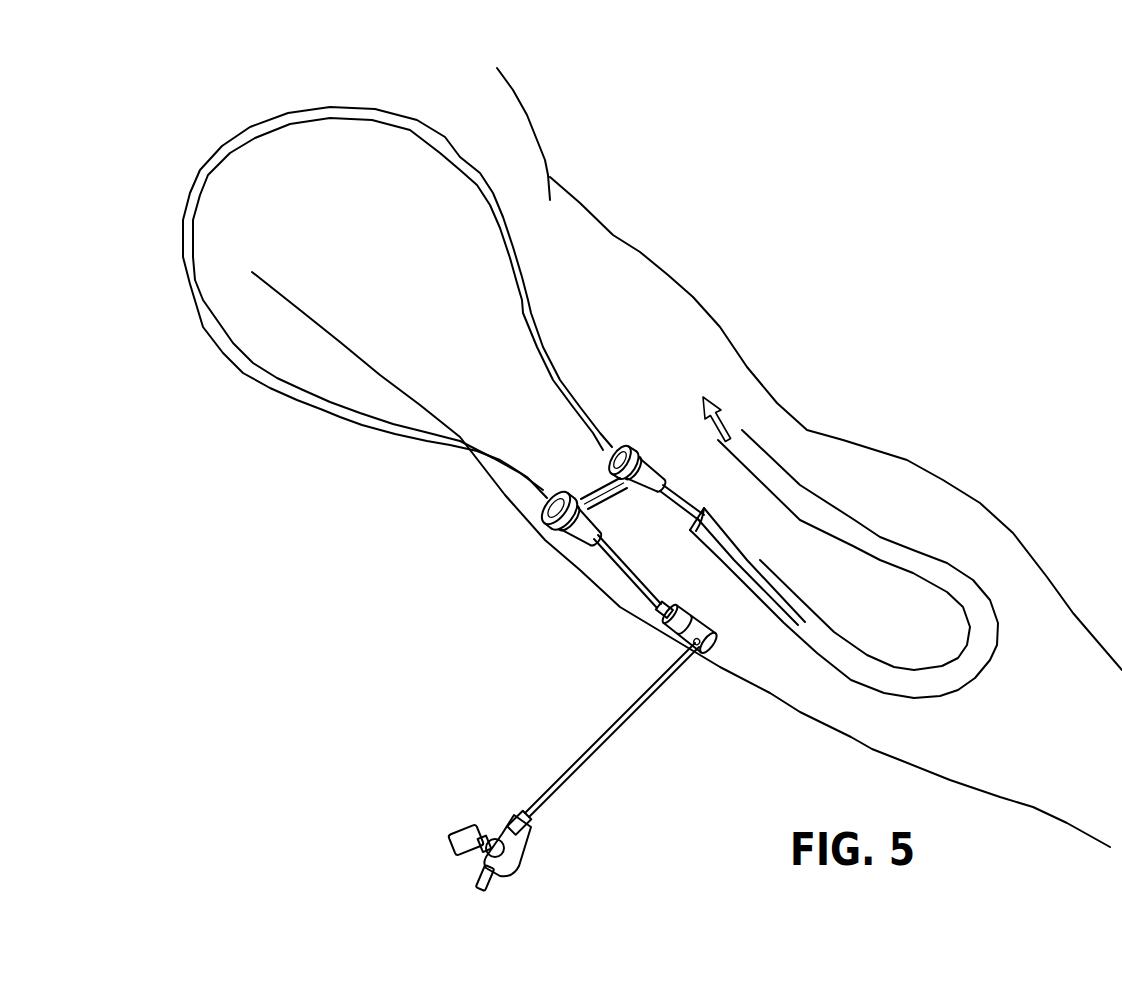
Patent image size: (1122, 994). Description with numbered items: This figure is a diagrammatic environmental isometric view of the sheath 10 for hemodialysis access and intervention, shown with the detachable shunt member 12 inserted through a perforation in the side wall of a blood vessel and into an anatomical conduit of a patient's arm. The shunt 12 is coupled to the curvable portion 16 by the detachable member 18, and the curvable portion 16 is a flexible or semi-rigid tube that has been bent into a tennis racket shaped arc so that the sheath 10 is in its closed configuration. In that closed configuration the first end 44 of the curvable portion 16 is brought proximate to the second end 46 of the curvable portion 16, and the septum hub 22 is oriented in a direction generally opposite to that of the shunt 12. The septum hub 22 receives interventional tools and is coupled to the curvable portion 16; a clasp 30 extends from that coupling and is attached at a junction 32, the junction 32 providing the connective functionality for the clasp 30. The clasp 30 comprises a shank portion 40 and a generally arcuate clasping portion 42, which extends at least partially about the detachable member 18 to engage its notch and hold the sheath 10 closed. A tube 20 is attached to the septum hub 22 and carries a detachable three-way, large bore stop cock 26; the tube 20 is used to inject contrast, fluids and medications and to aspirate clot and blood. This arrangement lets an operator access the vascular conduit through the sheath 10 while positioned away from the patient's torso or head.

The sheath 10 is at (563, 489).
The detachable shunt member 12 is at (844, 528).
The curvable portion 16 is at (370, 289).
The detachable member 18 is at (721, 400).
The tube 20 is at (603, 739).
The septum hub 22 is at (648, 605).
The stop cock 26 is at (536, 857).
The clasp 30 is at (567, 458).
The junction 32 is at (548, 555).
The shank portion 40 is at (649, 511).
The clasping portion 42 is at (660, 350).
The first end 44 is at (620, 325).
The second end 46 is at (505, 529).